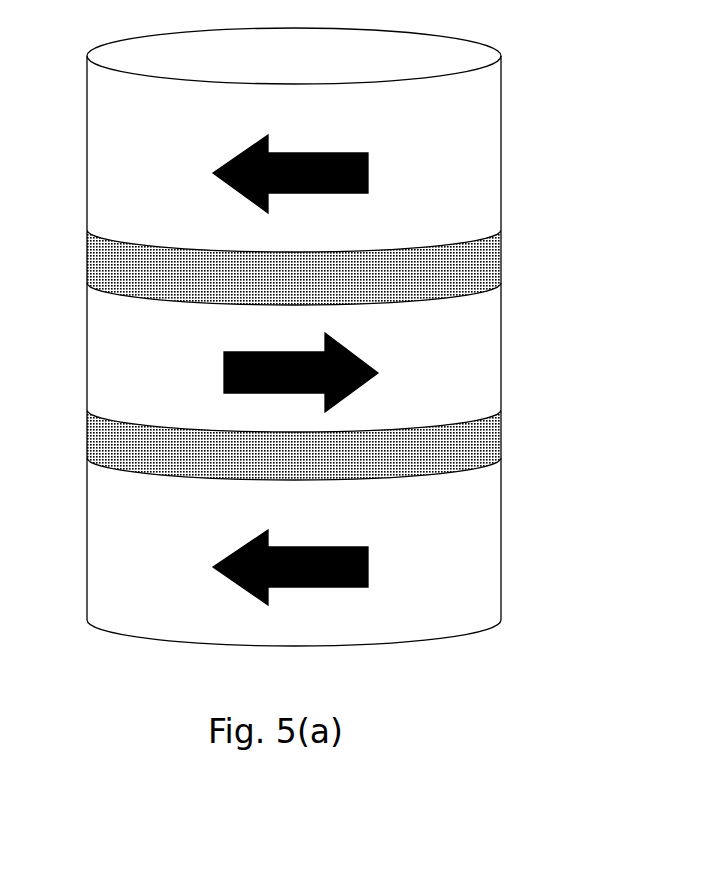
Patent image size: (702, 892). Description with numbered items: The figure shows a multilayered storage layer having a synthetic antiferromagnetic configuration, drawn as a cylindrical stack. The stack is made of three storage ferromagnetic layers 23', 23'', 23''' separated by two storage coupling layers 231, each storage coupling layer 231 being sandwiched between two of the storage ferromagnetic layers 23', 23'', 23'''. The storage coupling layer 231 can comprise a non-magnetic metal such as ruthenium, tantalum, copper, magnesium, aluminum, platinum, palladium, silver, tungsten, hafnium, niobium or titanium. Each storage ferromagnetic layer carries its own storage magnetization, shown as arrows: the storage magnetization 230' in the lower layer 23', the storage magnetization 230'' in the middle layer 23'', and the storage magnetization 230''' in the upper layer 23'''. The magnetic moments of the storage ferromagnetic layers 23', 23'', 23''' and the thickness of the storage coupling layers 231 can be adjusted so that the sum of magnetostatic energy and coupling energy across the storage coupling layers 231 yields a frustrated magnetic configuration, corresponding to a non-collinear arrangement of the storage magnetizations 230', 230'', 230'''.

The storage ferromagnetic layer 23''' is at (381, 129).
The storage ferromagnetic layer 23'' is at (377, 346).
The storage ferromagnetic layer 23' is at (373, 552).
The storage coupling layer 231 is at (501, 252).
The storage magnetization 230''' is at (290, 165).
The storage magnetization 230'' is at (301, 365).
The storage magnetization 230' is at (290, 559).